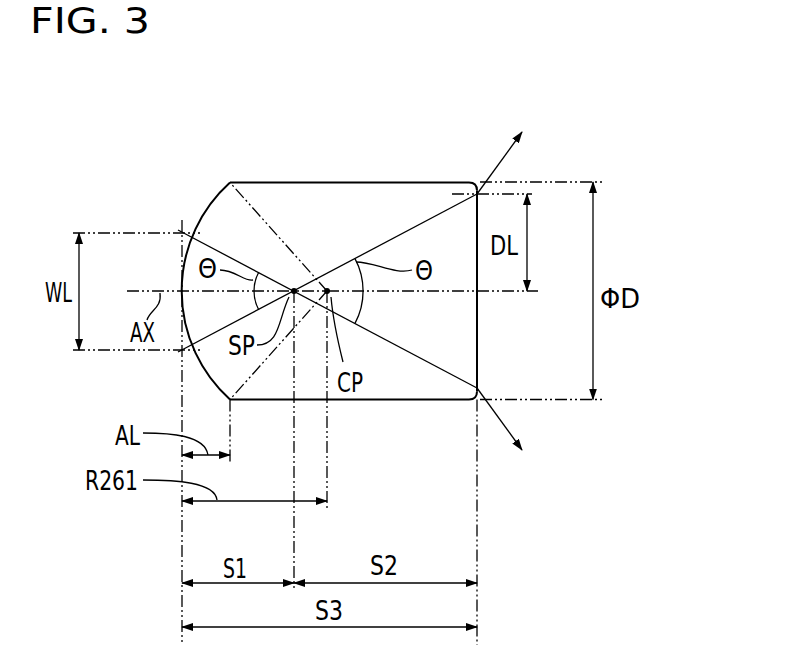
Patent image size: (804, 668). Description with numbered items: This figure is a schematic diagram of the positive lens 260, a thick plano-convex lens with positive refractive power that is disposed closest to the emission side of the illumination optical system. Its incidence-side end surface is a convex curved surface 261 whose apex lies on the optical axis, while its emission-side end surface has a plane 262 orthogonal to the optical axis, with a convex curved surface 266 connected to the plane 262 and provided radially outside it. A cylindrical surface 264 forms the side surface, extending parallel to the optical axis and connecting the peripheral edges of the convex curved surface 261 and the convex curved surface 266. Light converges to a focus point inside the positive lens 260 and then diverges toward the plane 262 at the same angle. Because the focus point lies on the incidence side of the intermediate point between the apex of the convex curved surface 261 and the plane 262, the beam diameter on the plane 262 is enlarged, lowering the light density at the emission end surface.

The positive lens 260 is at (347, 181).
The convex curved surface 261 is at (206, 205).
The cylindrical surface 264 is at (270, 181).
The convex curved surface 266 is at (480, 187).
The plane 262 is at (477, 364).